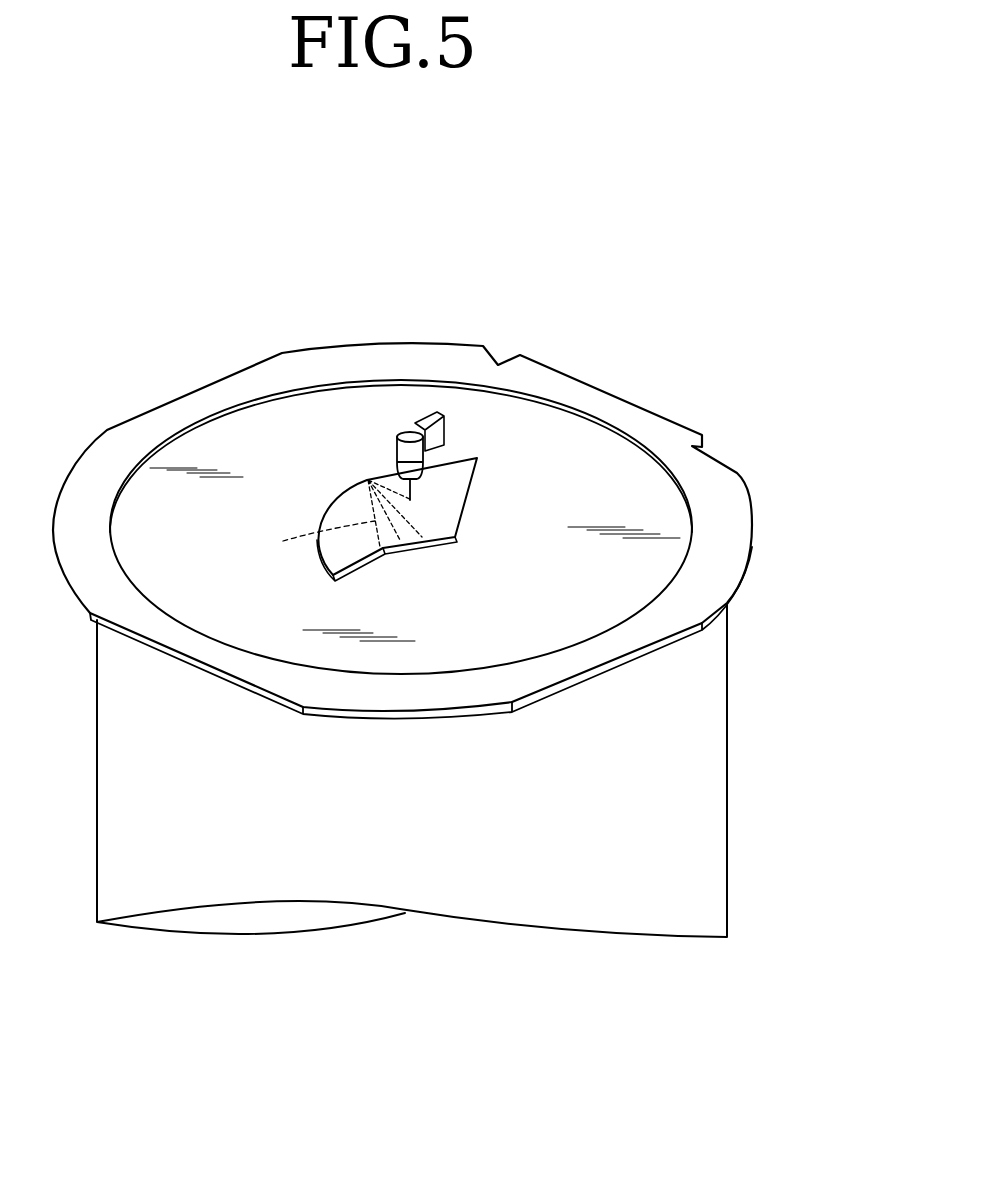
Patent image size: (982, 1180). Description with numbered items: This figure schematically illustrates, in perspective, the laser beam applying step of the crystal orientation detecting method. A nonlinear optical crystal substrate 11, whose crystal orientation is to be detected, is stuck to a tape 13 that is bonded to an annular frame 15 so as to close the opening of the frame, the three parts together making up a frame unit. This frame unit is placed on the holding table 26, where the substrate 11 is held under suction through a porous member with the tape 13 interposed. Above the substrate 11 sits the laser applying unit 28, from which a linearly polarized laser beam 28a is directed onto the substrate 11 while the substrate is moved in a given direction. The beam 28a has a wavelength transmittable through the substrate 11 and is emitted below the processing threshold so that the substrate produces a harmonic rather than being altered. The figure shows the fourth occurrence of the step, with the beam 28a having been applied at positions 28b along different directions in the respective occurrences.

The nonlinear optical crystal substrate 11 is at (433, 523).
The tape 13 is at (273, 423).
The annular frame 15 is at (112, 462).
The holding table 26 is at (698, 800).
The spray nozzle 28 is at (408, 437).
The linearly polarized laser beam 28a is at (415, 490).
The positions 28b is at (304, 537).